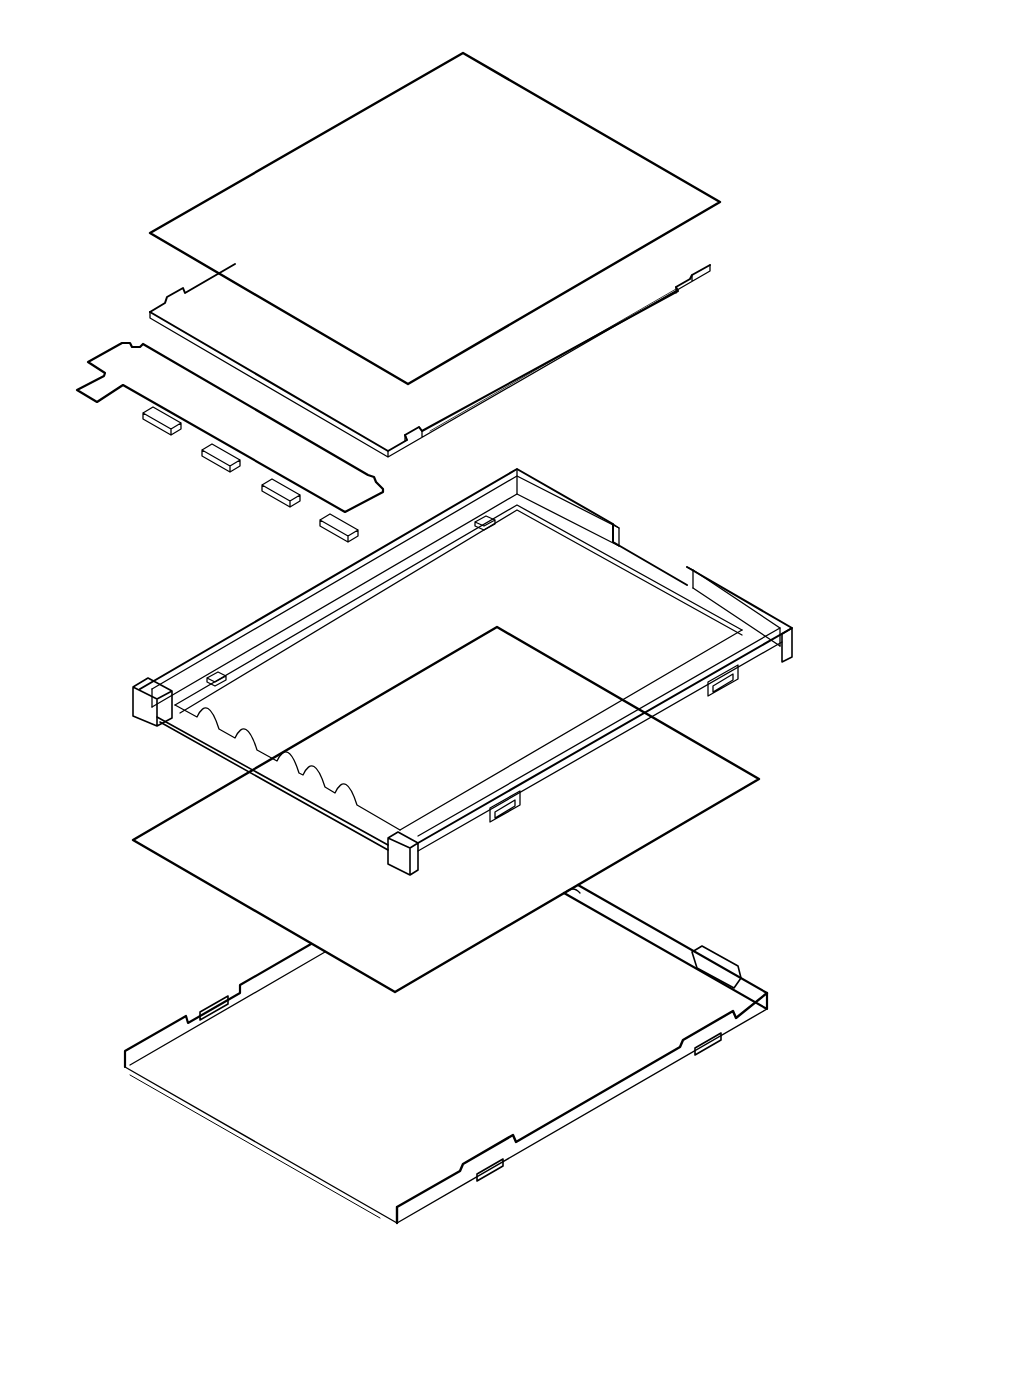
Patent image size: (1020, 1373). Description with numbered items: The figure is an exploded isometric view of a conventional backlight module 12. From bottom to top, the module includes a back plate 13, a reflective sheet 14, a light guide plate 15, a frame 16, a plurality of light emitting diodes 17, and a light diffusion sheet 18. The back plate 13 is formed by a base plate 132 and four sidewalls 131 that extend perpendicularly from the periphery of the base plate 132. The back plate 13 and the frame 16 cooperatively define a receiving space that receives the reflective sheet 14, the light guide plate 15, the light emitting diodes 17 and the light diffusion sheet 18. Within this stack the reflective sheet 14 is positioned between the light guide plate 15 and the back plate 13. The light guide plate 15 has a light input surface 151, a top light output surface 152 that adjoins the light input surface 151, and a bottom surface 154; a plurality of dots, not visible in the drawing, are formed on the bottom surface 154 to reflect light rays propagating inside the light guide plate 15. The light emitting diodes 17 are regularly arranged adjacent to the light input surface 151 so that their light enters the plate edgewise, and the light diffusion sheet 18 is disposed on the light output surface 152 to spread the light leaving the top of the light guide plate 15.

The backlight module 12 is at (421, 34).
The back plate 13 is at (664, 911).
The sidewalls 131 is at (625, 1085).
The base plate 132 is at (563, 1078).
The reflective sheet 14 is at (720, 771).
The light guide plate 15 is at (703, 238).
The light input surface 151 is at (391, 453).
The light output surface 152 is at (637, 283).
The bottom surface 154 is at (562, 367).
The frame 16 is at (580, 523).
The light emitting diodes 17 is at (223, 454).
The light diffusion sheet 18 is at (618, 162).